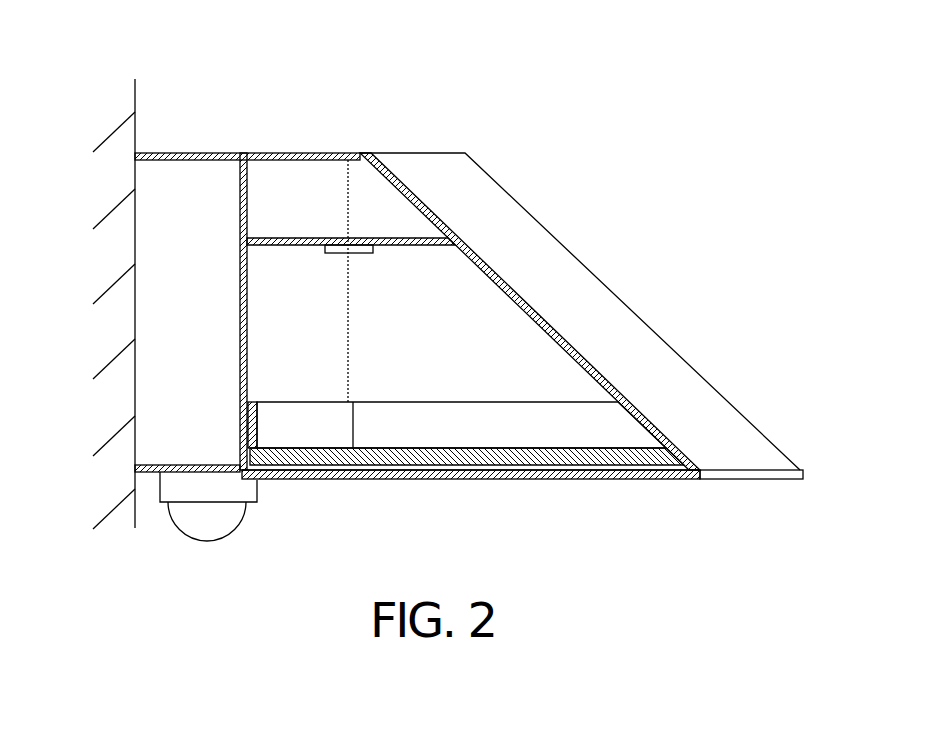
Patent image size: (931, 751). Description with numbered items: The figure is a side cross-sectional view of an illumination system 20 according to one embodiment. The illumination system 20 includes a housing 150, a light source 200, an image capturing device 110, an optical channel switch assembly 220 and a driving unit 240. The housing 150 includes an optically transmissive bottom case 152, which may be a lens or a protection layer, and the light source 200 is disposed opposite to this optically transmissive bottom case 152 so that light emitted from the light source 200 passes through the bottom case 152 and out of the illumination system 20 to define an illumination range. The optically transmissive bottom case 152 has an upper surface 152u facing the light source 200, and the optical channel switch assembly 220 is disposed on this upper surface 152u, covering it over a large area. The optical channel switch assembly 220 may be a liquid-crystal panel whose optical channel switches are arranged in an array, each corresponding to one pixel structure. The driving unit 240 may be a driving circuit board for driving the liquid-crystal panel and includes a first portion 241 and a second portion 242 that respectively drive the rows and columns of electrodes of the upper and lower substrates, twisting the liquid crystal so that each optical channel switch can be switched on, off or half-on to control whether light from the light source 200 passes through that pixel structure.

The illumination system 20 is at (92, 42).
The image capturing device 110 is at (201, 520).
The housing 150 is at (567, 248).
The optically transmissive bottom case 152 is at (574, 481).
The upper surface 152u is at (608, 466).
The light source 200 is at (333, 249).
The optical channel switch assembly 220 is at (452, 455).
The driving unit 240 is at (190, 310).
The first portion 241 is at (402, 420).
The second portion 242 is at (288, 418).